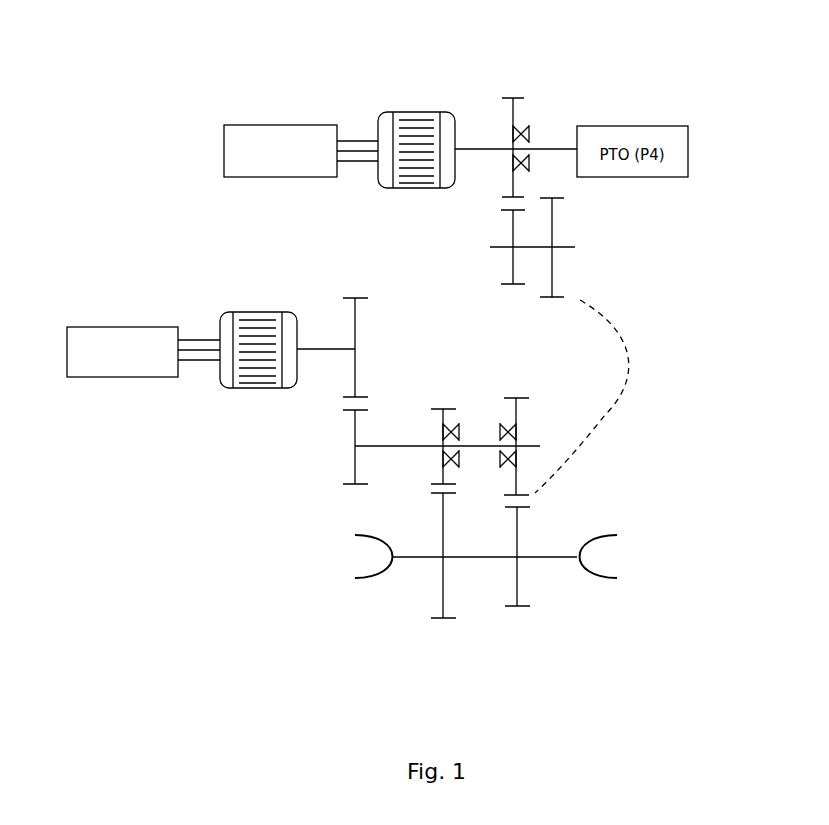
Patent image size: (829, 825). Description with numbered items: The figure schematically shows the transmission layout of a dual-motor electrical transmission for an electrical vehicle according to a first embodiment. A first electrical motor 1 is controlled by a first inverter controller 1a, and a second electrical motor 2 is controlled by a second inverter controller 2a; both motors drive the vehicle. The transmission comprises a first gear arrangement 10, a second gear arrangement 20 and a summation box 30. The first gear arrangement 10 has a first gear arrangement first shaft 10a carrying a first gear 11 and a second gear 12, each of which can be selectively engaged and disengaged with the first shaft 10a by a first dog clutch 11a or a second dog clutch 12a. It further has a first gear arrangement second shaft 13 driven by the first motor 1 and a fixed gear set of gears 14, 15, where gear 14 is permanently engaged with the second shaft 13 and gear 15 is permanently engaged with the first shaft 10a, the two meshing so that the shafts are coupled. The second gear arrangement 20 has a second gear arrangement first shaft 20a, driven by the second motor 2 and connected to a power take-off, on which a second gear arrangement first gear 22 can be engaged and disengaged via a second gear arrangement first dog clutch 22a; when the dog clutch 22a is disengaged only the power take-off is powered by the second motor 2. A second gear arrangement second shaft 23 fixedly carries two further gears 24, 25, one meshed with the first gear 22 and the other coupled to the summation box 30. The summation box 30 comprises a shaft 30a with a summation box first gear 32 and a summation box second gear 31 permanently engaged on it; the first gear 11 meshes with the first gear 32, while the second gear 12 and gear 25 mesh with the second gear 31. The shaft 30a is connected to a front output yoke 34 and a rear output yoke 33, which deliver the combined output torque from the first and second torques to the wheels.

The first electrical motor 1 is at (228, 310).
The first inverter controller 1a is at (115, 325).
The second electrical motor 2 is at (398, 112).
The second inverter controller 2a is at (243, 125).
The first gear arrangement 10 is at (625, 422).
The first gear arrangement first shaft 10a is at (380, 445).
The first gear 11 is at (433, 487).
The first dog clutch 11a is at (458, 435).
The second gear 12 is at (520, 487).
The second dog clutch 12a is at (497, 428).
The first gear arrangement second shaft 13 is at (320, 348).
The fixed gear set gear 14 is at (353, 378).
The fixed gear set gear 15 is at (350, 444).
The second gear arrangement 20 is at (655, 322).
The second gear arrangement first shaft 20a is at (468, 148).
The second gear arrangement first gear 22 is at (523, 100).
The second gear arrangement first dog clutch 22a is at (530, 130).
The second gear arrangement second shaft 23 is at (500, 246).
The further gear 24 is at (515, 240).
The further gear 25 is at (555, 283).
The summation box 30 is at (357, 640).
The shaft 30a is at (495, 560).
The summation box second gear 31 is at (520, 610).
The summation box first gear 32 is at (435, 618).
The rear output yoke 33 is at (365, 580).
The front output yoke 34 is at (600, 575).